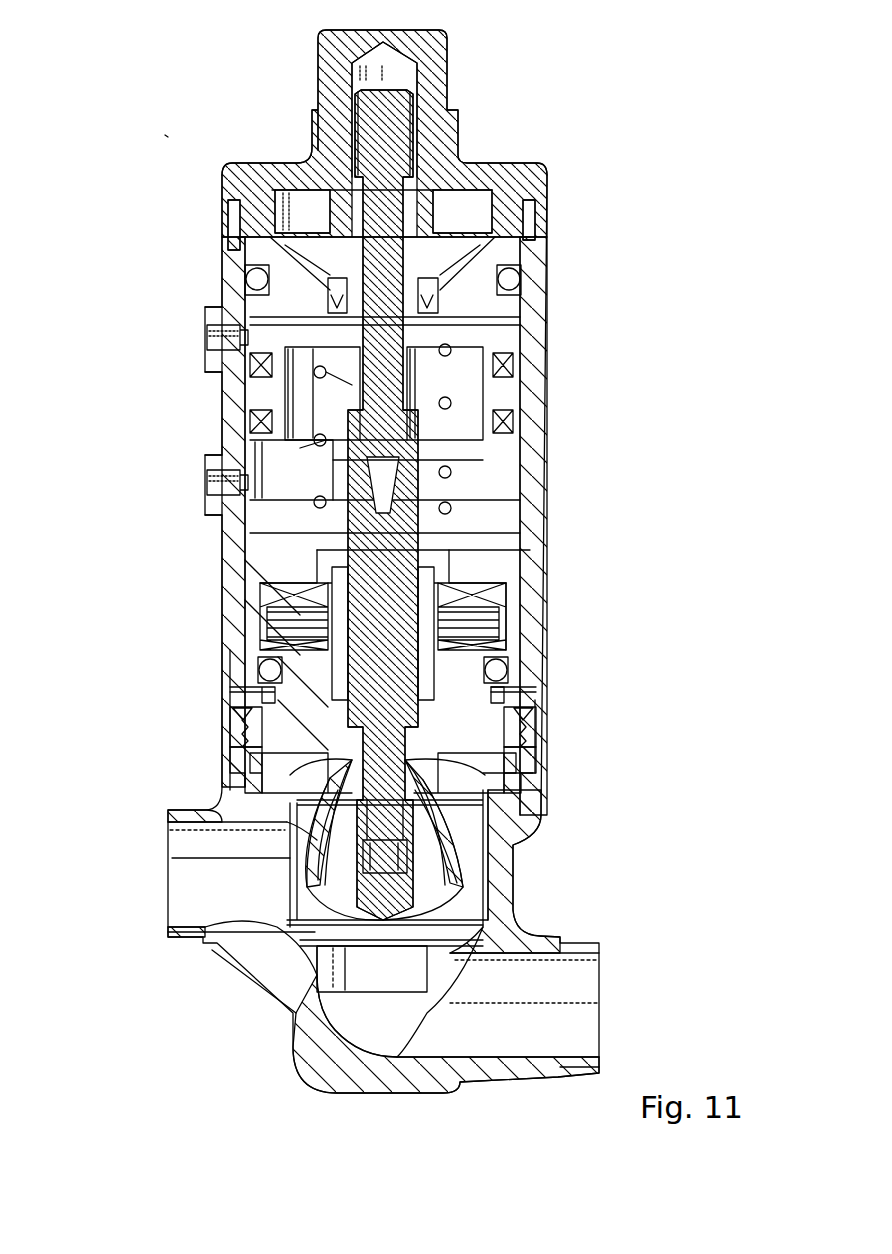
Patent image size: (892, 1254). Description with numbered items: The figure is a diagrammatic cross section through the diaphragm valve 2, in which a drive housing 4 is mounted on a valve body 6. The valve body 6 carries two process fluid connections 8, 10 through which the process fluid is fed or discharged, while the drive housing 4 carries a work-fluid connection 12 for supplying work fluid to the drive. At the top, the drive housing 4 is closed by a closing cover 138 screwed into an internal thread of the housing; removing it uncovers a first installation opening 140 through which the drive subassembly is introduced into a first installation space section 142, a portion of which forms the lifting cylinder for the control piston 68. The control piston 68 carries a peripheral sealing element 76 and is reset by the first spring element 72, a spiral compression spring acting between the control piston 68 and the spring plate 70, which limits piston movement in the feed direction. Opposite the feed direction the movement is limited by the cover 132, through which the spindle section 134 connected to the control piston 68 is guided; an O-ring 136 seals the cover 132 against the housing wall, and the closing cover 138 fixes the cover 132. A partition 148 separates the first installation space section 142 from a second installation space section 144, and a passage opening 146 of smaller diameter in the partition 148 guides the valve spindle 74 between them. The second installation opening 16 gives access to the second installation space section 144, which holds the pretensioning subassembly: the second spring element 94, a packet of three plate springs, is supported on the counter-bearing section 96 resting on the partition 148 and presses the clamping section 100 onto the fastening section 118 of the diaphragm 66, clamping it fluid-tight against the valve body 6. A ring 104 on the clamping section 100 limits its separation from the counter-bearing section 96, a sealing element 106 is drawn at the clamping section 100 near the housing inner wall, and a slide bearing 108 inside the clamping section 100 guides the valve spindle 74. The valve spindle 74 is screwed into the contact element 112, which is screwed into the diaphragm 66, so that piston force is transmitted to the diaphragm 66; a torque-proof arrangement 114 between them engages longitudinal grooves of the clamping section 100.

The diaphragm valve 2 is at (162, 133).
The drive housing 4 is at (528, 333).
The valve body 6 is at (318, 1058).
The process fluid connection 8 is at (175, 818).
The process fluid connection 10 is at (580, 940).
The work-fluid connection 12 is at (220, 340).
The second installation opening 16 is at (531, 760).
The diaphragm 66 is at (443, 877).
The control piston 68 is at (512, 393).
The spring plate 70 is at (498, 520).
The first spring element 72 is at (318, 445).
The valve spindle 74 is at (353, 552).
The sealing element 76 is at (510, 378).
The second spring element 94 is at (310, 628).
The counter-bearing section 96 is at (503, 608).
The clamping section 100 is at (280, 727).
The ring 104 is at (436, 580).
The O-ring 106 is at (503, 675).
The slide bearing 108 is at (262, 662).
The contact element 112 is at (403, 827).
The torque-proof arrangement 114 is at (445, 735).
The fastening section 118 is at (287, 812).
The cover 132 is at (243, 303).
The spindle section 134 is at (383, 135).
The O-ring 136 is at (515, 282).
The closing cover 138 is at (510, 160).
The first installation opening 140 is at (467, 200).
The first installation space section 142 is at (500, 468).
The second installation space section 144 is at (485, 645).
The passage opening 146 is at (440, 550).
The partition 148 is at (290, 572).